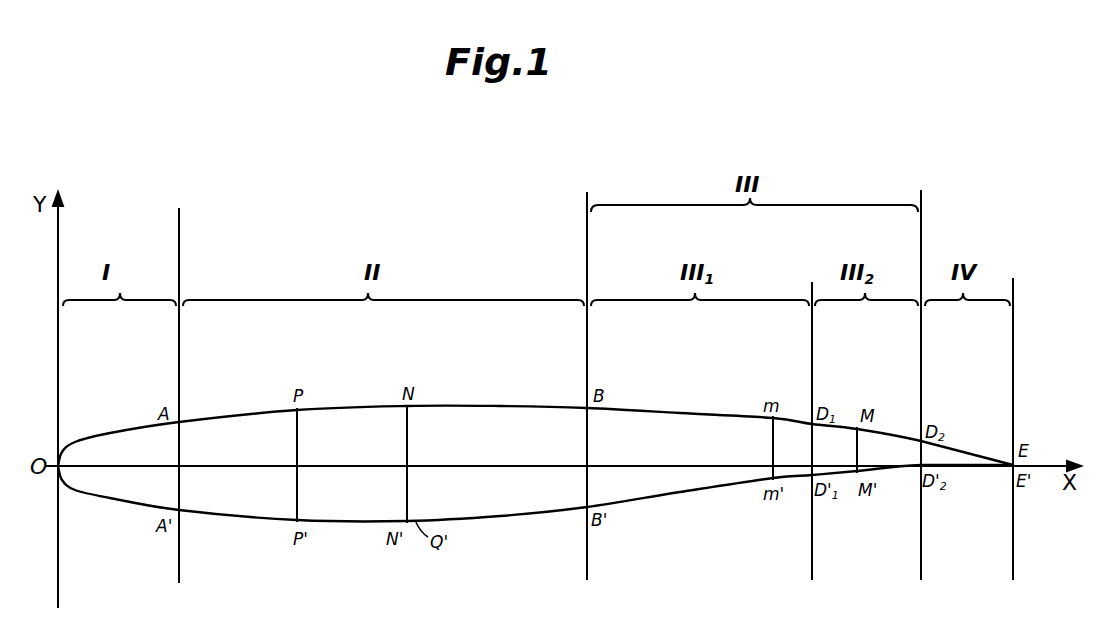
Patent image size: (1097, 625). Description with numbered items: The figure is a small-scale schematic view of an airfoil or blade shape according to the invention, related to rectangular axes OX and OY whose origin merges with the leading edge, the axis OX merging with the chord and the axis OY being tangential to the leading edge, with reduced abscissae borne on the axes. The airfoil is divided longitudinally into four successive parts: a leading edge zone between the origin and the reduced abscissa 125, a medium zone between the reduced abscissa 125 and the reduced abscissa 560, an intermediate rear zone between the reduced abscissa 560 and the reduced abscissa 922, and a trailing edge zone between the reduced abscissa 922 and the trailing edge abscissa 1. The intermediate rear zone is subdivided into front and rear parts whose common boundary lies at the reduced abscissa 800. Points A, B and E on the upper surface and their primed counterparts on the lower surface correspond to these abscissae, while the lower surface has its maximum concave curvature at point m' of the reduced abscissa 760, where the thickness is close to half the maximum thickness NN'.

The reduced abscissa of the trailing edge 1 is at (1010, 460).
The reduced abscissa 0. 125 is at (203, 395).
The reduced abscissa 0. 560 is at (611, 386).
The reduced abscissa 0. 760 is at (771, 465).
The reduced abscissa 0. 800 is at (835, 431).
The reduced abscissa 0. 922 is at (919, 465).